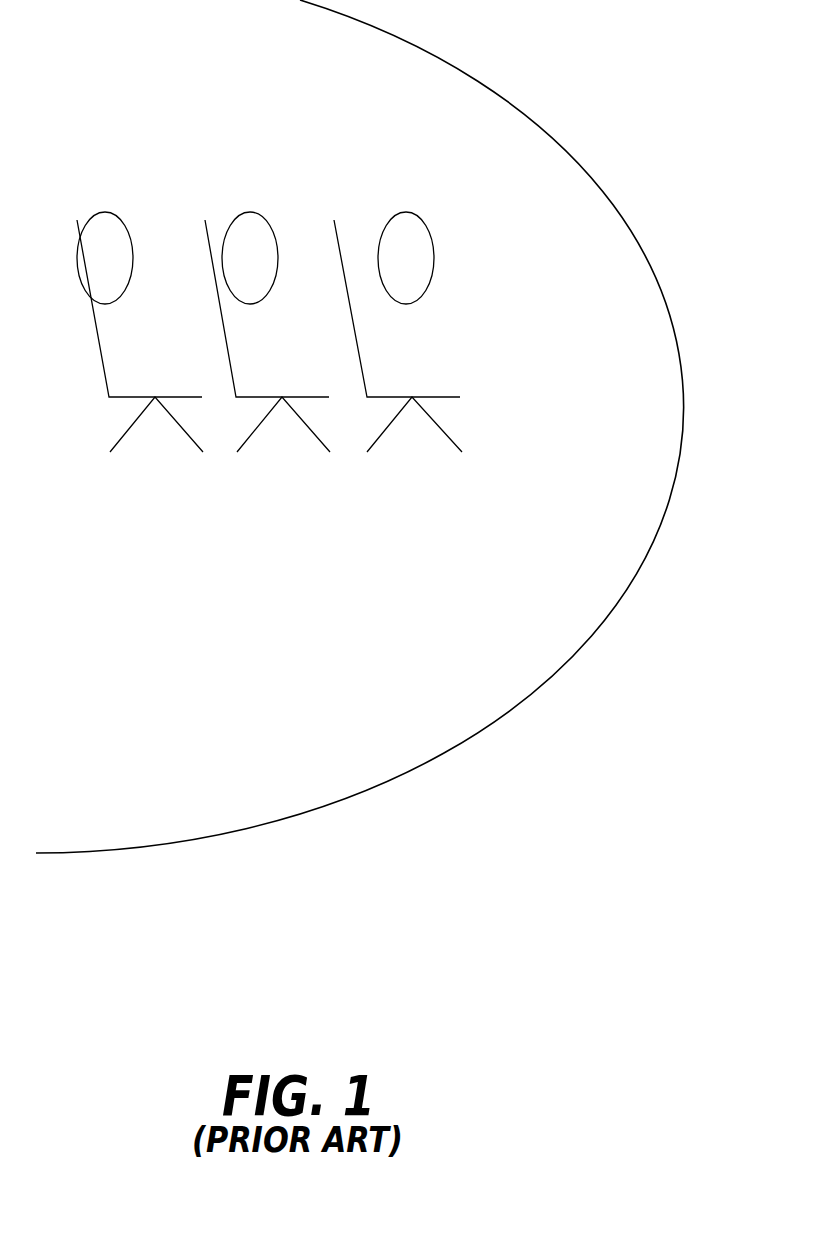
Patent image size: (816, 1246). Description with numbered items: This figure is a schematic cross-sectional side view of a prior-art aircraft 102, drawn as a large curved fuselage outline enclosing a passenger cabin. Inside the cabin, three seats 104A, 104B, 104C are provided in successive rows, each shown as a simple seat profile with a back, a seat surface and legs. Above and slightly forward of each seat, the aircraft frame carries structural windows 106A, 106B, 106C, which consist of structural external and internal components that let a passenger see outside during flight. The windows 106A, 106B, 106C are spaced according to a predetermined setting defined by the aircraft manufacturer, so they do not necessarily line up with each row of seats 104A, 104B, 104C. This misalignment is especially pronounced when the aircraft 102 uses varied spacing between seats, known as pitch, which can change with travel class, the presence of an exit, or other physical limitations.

The aircraft 102 is at (553, 137).
The seat 104A is at (102, 367).
The seat 104B is at (230, 370).
The seat 104C is at (360, 372).
The structural window 106A is at (107, 212).
The structural window 106B is at (252, 212).
The structural window 106C is at (407, 212).